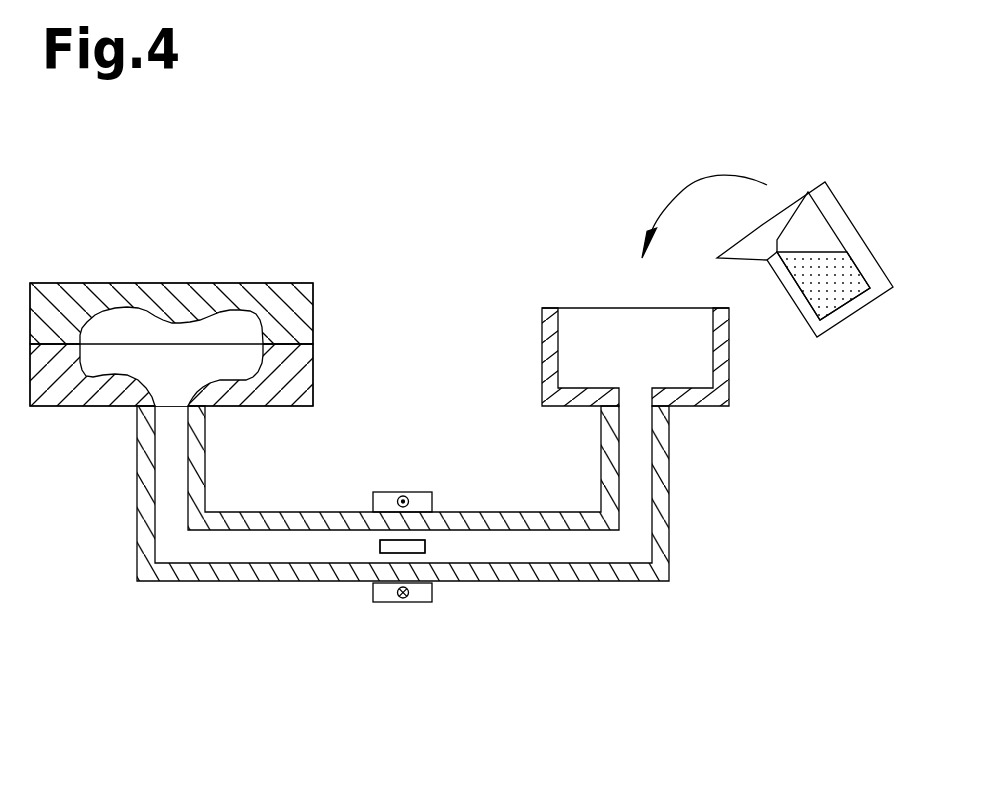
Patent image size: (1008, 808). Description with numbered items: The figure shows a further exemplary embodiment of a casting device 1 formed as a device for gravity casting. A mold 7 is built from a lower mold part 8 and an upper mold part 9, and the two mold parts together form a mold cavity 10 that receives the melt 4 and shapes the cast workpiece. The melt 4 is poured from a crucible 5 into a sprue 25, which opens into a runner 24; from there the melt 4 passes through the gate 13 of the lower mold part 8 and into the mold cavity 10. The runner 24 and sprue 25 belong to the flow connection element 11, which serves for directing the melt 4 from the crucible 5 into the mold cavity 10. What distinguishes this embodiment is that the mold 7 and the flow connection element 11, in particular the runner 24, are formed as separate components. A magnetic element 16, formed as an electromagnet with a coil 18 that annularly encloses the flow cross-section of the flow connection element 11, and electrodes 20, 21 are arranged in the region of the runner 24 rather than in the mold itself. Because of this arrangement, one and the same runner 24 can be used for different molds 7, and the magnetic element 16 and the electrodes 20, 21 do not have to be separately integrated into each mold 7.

The casting device 1 is at (103, 162).
The melt 4 is at (822, 265).
The crucible 5 is at (837, 217).
The mold 7 is at (332, 220).
The lower mold part 8 is at (296, 356).
The upper mold part 9 is at (70, 284).
The mold cavity 10 is at (163, 333).
The flow connection element 11 is at (173, 615).
The gate 13 is at (235, 391).
The magnetic element 16 is at (418, 632).
The coil 18 is at (376, 631).
The electrode 20 is at (425, 548).
The electrode 21 is at (402, 546).
The runner 24 is at (560, 575).
The sprue 25 is at (678, 345).